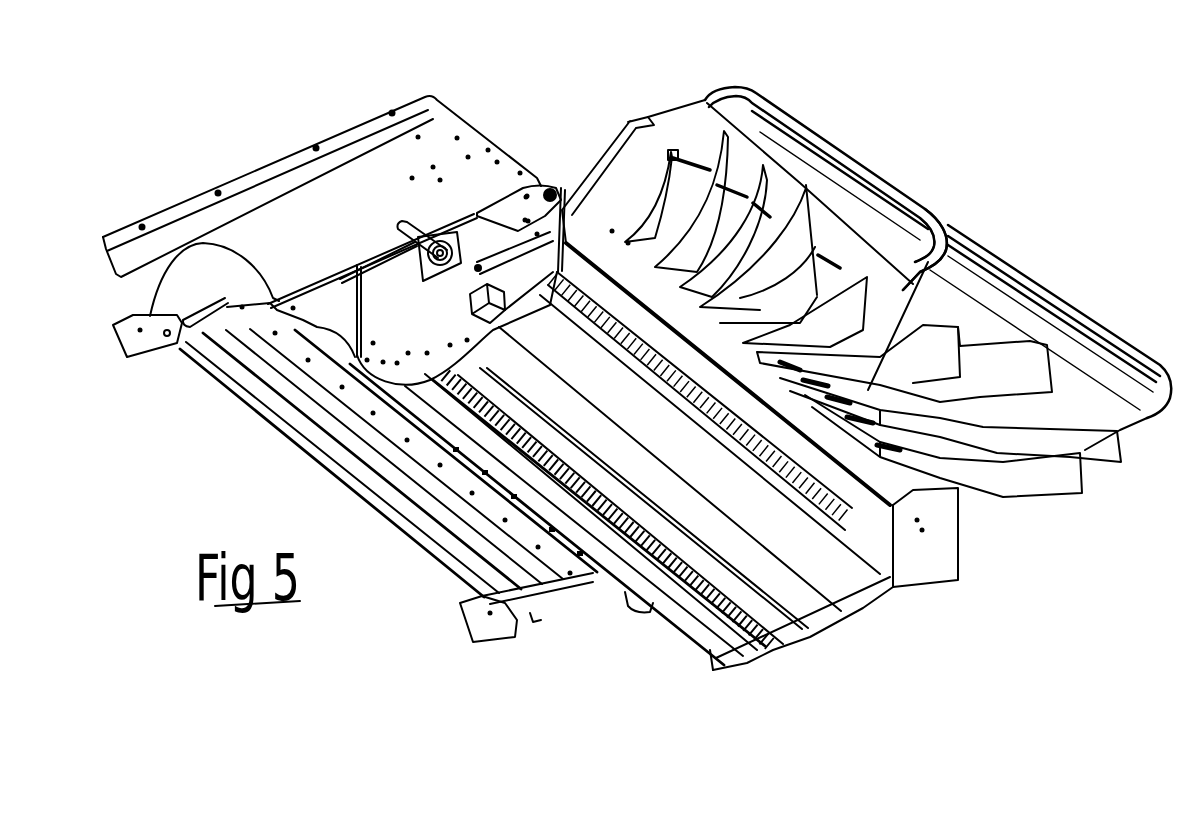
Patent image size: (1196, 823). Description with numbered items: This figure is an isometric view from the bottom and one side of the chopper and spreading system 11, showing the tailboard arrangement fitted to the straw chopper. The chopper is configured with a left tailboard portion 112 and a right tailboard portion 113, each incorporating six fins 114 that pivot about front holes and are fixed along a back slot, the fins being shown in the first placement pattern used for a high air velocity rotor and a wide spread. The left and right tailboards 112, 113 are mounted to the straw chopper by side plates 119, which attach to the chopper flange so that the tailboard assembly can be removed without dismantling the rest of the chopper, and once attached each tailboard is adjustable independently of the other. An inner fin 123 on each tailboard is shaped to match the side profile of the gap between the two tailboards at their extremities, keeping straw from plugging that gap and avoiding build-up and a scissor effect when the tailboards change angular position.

The header assembly 11 is at (637, 368).
The left tailboard portion 112 is at (850, 150).
The right tailboard portion 113 is at (1078, 282).
The fins 114 is at (671, 152).
The side plates 119 is at (548, 190).
The inner fin 123 is at (920, 268).